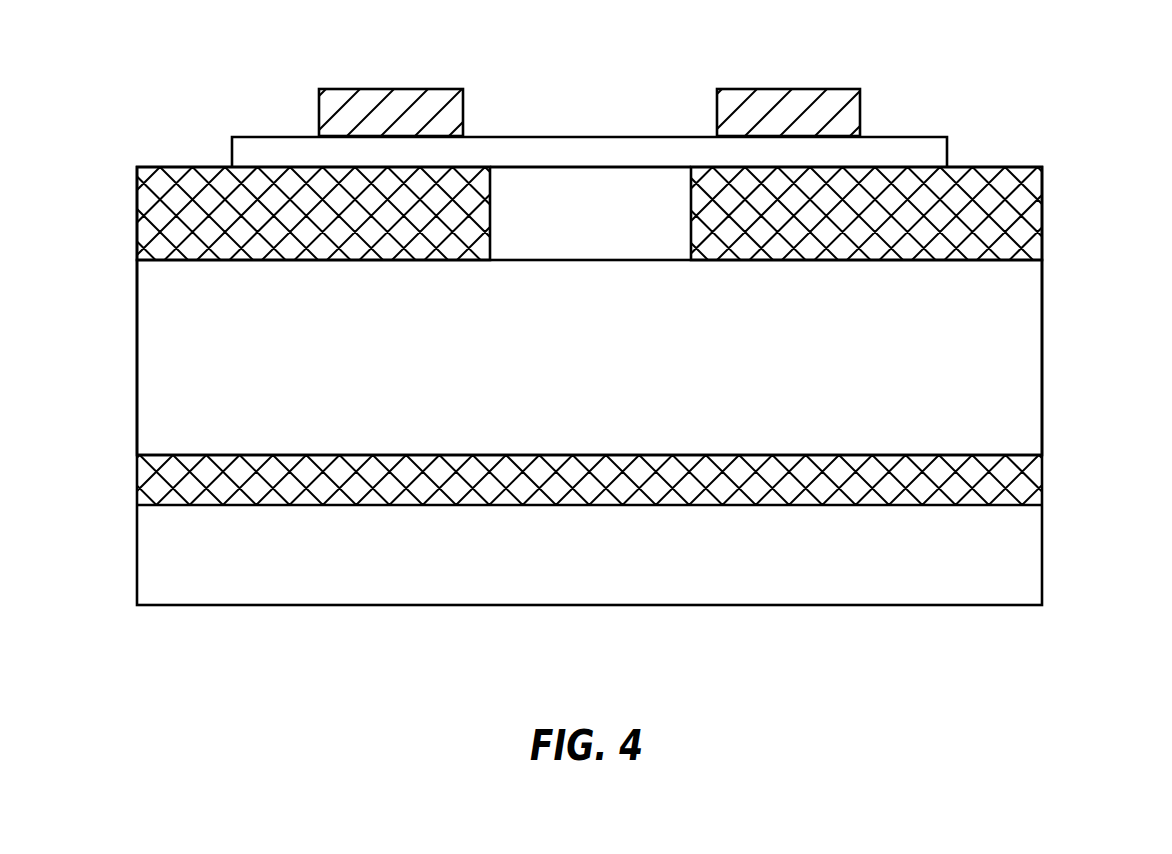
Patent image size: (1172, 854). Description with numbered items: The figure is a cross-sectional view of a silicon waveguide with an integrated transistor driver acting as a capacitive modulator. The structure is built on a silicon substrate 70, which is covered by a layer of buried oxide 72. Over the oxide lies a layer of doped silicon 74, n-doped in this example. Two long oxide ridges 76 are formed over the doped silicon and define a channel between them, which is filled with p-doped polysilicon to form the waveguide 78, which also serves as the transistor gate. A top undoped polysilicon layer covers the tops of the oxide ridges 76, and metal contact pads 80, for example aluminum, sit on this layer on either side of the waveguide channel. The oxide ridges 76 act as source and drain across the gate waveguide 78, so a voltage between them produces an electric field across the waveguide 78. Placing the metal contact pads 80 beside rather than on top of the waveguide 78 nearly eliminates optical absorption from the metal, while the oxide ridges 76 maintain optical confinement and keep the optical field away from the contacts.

The silicon substrate 70 is at (918, 585).
The buried oxide layer 72 is at (1010, 473).
The doped silicon layer 74 is at (1020, 360).
The oxide ridges 76 is at (145, 203).
The waveguide 78 is at (620, 182).
The metal contact pads 80 is at (365, 88).